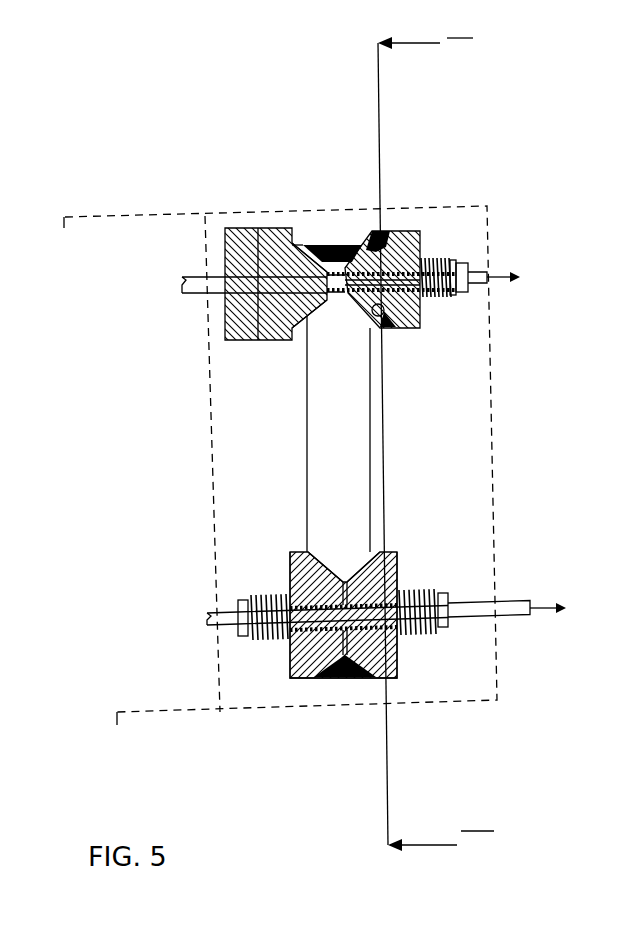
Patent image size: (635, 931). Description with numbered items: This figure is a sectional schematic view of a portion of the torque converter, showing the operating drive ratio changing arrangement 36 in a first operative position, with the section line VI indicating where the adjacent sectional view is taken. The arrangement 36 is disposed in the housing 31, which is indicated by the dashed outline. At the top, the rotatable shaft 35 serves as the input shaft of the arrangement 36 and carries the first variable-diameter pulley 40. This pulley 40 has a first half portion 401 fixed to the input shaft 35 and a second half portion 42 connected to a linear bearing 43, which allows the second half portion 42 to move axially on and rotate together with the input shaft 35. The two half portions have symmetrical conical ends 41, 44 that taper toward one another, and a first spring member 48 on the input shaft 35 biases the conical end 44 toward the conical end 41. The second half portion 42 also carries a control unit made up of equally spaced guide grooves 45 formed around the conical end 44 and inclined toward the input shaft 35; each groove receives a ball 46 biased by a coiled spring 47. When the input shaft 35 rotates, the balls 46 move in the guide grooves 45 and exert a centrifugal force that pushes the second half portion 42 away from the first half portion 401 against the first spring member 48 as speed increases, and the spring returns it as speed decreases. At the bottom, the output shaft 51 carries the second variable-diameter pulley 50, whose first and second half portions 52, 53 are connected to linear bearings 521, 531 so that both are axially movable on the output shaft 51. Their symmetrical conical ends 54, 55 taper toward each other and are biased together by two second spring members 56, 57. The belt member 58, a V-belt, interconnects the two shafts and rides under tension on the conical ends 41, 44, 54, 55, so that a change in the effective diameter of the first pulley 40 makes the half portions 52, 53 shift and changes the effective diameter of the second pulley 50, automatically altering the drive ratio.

The housing 31 is at (495, 344).
The rotatable shaft 35 is at (195, 277).
The operating drive ratio changing arrangement 36 is at (128, 422).
The first variable-diameter pulley 40 is at (226, 224).
The first half portion 401 is at (275, 250).
The conical end 41 is at (300, 252).
The second half portion 42 is at (420, 233).
The linear bearing 43 is at (424, 255).
The conical end 44 is at (372, 250).
The guide grooves 45 is at (357, 250).
The ball 46 is at (386, 233).
The coiled spring 47 is at (393, 240).
The first spring member 48 is at (450, 258).
The second variable-diameter pulley 50 is at (402, 568).
The output shaft 51 is at (513, 608).
The first half portion 52 is at (395, 660).
The linear bearing 521 is at (420, 587).
The second half portion 53 is at (295, 680).
The linear bearing 531 is at (312, 603).
The conical end 54 is at (353, 673).
The conical end 55 is at (333, 672).
The second spring member 56 is at (422, 637).
The second spring member 57 is at (258, 643).
The belt member 58 is at (322, 480).
The section line VI is at (436, 435).